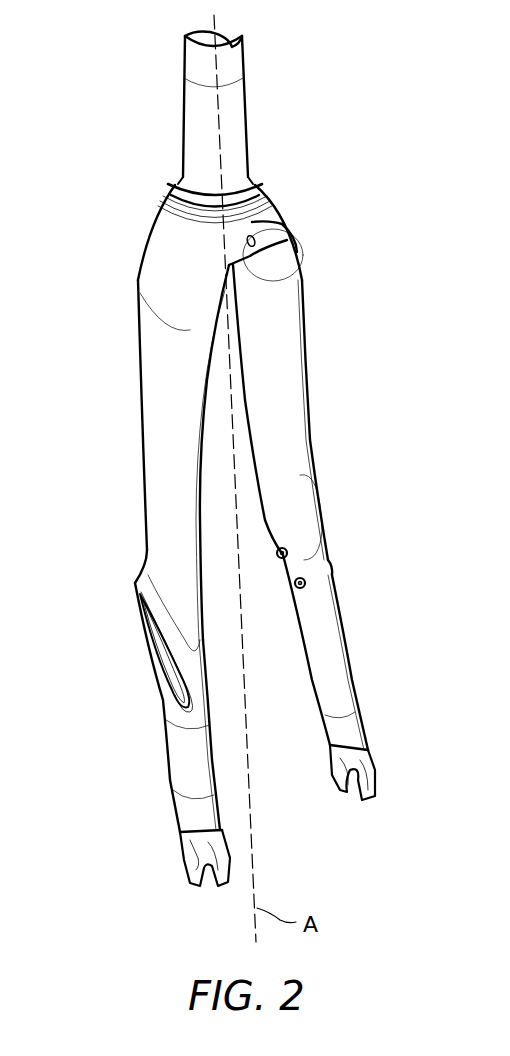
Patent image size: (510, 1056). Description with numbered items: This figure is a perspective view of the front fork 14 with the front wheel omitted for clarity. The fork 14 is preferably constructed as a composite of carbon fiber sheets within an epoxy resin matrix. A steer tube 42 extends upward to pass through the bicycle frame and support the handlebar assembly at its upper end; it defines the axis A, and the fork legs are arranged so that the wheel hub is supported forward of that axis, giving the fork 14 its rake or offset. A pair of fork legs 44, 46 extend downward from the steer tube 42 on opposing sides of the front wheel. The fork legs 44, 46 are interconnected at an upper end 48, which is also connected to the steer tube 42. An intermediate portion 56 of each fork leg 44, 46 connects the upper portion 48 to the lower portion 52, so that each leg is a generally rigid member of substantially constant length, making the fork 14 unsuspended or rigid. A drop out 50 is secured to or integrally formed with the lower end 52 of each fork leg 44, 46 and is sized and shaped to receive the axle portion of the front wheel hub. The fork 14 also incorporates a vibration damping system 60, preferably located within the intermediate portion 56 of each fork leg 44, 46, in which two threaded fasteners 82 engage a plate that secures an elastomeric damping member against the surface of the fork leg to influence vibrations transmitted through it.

The front fork 14 is at (306, 290).
The steer tube 42 is at (245, 138).
The upper end 48 is at (278, 220).
The fork leg 44 is at (137, 473).
The fork leg 46 is at (320, 398).
The intermediate portion 56 is at (155, 518).
The vibration damping system 60 is at (127, 642).
The lower portion 52 is at (172, 757).
The drop out 50 is at (185, 855).
The threaded fasteners 82 is at (278, 558).